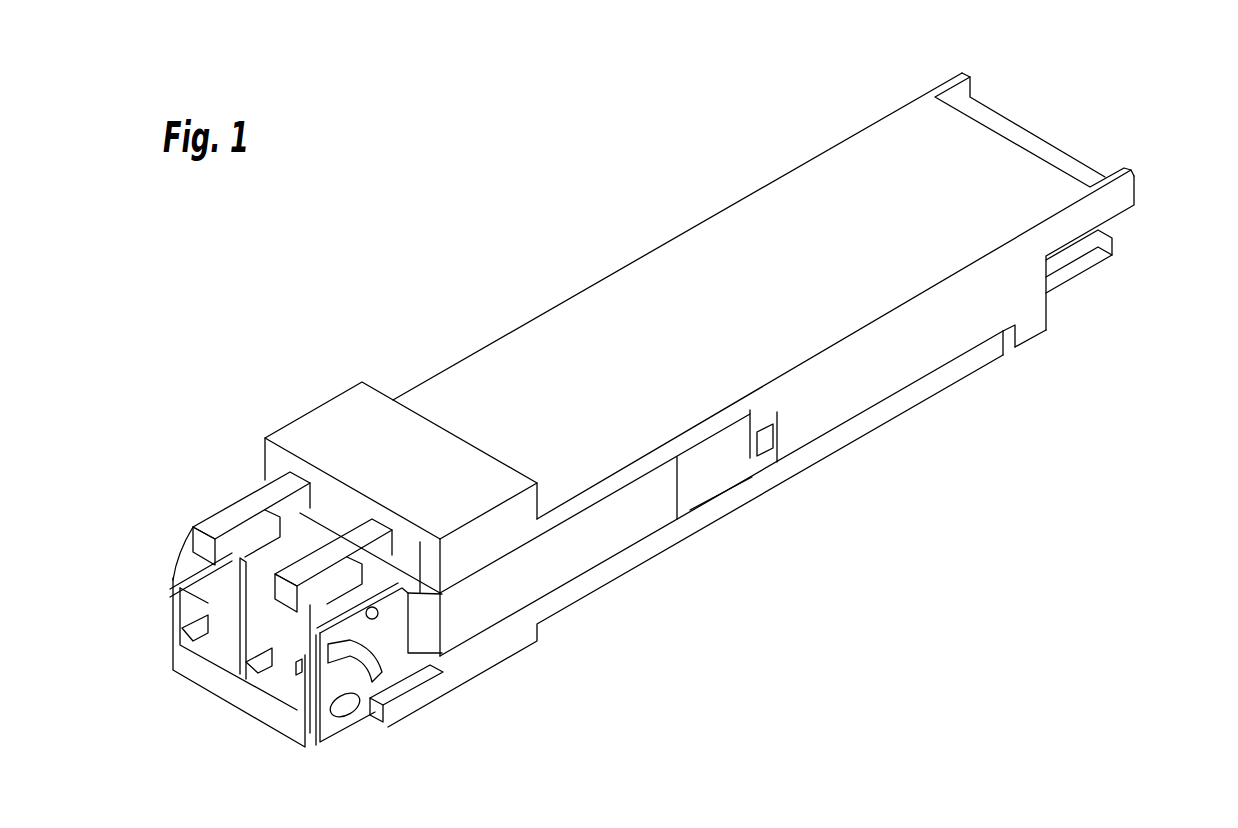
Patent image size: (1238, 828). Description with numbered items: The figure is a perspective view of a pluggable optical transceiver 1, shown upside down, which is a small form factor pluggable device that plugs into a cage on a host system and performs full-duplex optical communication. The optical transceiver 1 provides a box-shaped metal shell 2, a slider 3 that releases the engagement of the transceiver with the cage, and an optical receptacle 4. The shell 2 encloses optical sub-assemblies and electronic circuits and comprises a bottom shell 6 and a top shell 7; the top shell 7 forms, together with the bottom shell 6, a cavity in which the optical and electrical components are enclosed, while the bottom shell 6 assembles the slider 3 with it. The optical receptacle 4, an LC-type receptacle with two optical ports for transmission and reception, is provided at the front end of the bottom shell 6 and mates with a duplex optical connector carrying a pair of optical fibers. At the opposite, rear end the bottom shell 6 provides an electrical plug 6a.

The optical transceiver 1 is at (771, 132).
The metal shell 2 is at (682, 138).
The slider 3 is at (535, 573).
The optical receptacle 4 is at (218, 650).
The bottom shell 6 is at (607, 302).
The electrical plug 6a is at (1086, 267).
The top shell 7 is at (826, 447).